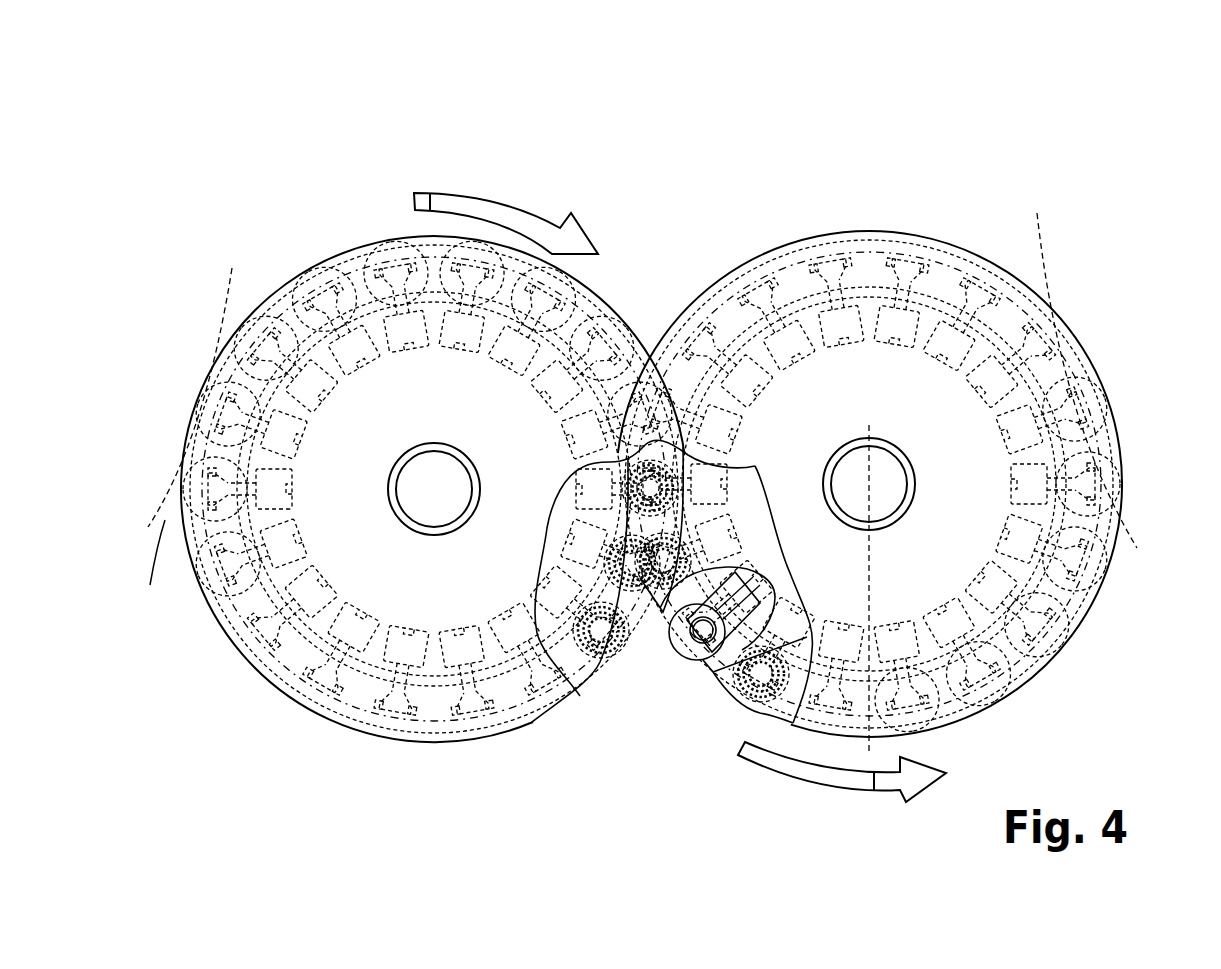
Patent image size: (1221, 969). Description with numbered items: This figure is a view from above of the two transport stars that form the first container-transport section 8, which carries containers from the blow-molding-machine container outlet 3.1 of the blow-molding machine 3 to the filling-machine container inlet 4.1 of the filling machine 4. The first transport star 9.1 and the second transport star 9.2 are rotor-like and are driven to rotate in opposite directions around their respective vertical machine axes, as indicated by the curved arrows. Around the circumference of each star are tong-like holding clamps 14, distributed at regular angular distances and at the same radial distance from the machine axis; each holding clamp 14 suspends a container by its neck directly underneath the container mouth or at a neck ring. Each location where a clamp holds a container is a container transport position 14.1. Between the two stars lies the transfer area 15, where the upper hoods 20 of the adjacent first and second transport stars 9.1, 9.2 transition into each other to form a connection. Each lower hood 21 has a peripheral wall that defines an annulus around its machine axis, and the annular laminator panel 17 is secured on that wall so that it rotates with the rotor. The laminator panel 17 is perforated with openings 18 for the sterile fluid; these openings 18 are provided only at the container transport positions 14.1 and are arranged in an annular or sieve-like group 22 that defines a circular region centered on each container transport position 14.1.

The blow-molding machine 3 is at (148, 578).
The blow-molding-machine container outlet 3.1 is at (210, 340).
The filling machine 4 is at (1040, 277).
The filling-machine container inlet 4.1 is at (1110, 362).
The first container-transport section 8 is at (502, 126).
The first transport star 9.1 is at (244, 260).
The second transport star 9.2 is at (896, 208).
The holding clamp 14 is at (715, 612).
The container transport position 14.1 is at (640, 667).
The transfer area 15 is at (652, 388).
The laminator panel 17 is at (583, 683).
The openings 18 is at (672, 490).
The upper hood 20 is at (358, 590).
The lower hood 21 is at (795, 600).
The group of openings 22 is at (620, 476).